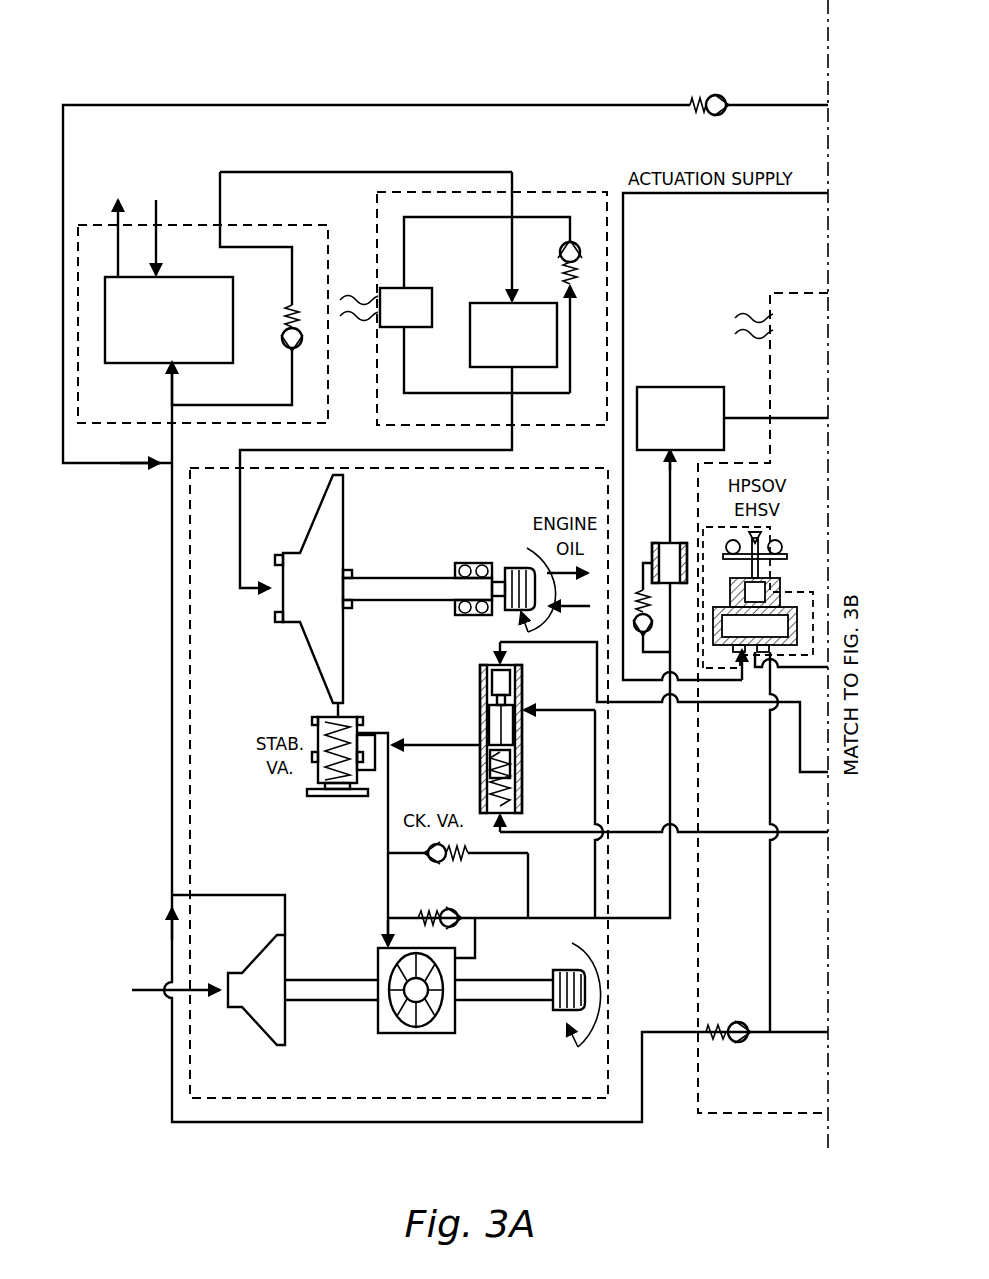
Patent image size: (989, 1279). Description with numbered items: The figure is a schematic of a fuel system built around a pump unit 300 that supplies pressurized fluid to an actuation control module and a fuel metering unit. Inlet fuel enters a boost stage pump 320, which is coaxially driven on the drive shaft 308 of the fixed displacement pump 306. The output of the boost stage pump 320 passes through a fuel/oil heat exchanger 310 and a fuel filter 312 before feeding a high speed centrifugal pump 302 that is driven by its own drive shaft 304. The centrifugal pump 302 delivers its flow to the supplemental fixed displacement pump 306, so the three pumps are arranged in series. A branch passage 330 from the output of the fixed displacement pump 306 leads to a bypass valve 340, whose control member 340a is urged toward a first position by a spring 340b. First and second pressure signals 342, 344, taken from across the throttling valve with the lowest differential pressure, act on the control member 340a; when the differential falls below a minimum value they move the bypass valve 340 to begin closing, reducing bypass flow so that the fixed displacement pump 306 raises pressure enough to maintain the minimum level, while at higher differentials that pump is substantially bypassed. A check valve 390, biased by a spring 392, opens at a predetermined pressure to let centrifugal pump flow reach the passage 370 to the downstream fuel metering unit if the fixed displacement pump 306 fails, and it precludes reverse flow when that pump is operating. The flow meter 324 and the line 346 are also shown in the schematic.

The pump unit 300 is at (185, 640).
The high speed centrifugal pump 302 is at (314, 665).
The drive shaft 304 is at (397, 600).
The fixed displacement pump 306 is at (378, 1012).
The drive shaft 308 is at (497, 993).
The fuel/oil heat exchanger 310 is at (268, 224).
The fuel filter 312 is at (550, 191).
The boost stage pump 320 is at (288, 958).
The flow meter 324 is at (680, 387).
The branch passage 330 is at (606, 772).
The bypass valve 340 is at (505, 748).
The control member 340a is at (512, 731).
The spring 340b is at (514, 790).
The pressure signal 342 is at (545, 643).
The pressure signal 344 is at (530, 834).
The bypass line to stabilizing valve 346 is at (450, 745).
The passage 370 is at (636, 918).
The check valve 390 is at (426, 858).
The spring 392 is at (462, 856).